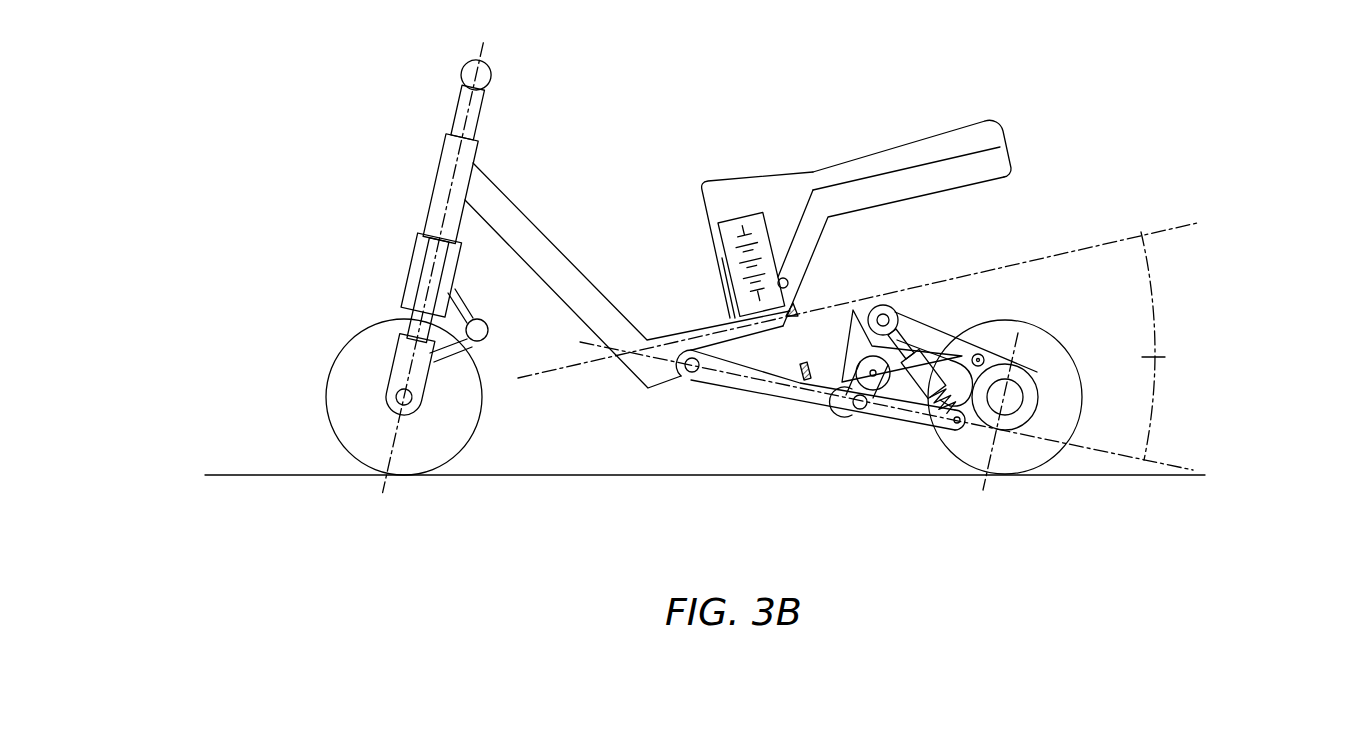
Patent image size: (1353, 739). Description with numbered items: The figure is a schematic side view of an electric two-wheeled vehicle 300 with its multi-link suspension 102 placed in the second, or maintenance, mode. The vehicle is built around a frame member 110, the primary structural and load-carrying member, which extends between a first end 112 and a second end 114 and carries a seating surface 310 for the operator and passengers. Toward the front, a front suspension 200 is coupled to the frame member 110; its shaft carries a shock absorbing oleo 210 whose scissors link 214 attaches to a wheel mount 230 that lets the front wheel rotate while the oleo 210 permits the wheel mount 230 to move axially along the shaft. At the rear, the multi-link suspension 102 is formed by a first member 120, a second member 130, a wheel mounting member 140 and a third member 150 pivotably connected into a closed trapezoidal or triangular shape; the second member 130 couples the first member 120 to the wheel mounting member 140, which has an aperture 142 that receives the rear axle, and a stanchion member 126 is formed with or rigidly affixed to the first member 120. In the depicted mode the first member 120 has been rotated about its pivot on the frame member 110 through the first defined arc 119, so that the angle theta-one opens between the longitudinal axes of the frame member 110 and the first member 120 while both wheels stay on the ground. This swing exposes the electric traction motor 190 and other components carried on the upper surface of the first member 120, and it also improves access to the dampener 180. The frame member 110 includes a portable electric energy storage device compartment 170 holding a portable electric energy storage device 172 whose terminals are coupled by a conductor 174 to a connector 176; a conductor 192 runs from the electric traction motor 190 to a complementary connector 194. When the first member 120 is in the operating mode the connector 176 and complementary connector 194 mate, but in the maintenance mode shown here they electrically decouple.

The vehicle 300 is at (851, 57).
The first defined arc 119 is at (1157, 318).
The front suspension 200 is at (398, 94).
The first end of the frame member 112 is at (437, 188).
The shock absorbing oleo 210 is at (392, 328).
The wheel mount 230 is at (402, 365).
The scissors link 214 is at (488, 325).
The frame member 110 is at (918, 184).
The second end of the frame member 114 is at (1012, 160).
The seating surface 310 is at (912, 140).
The portable electric energy storage device compartment 170 is at (725, 290).
The portable electric energy storage device 172 is at (742, 224).
The conductor 174 is at (788, 280).
The connector 176 is at (795, 309).
The complementary connector 194 is at (805, 365).
The multi-link suspension 102 is at (733, 406).
The first member 120 is at (780, 395).
The second member 130 is at (891, 412).
The electric traction motor 190 is at (853, 410).
The conductor 192 is at (850, 388).
The stanchion member 126 is at (856, 308).
The dampener 180 is at (928, 348).
The third member 150 is at (948, 341).
The wheel mounting member 140 is at (1022, 376).
The aperture 142 is at (1030, 378).